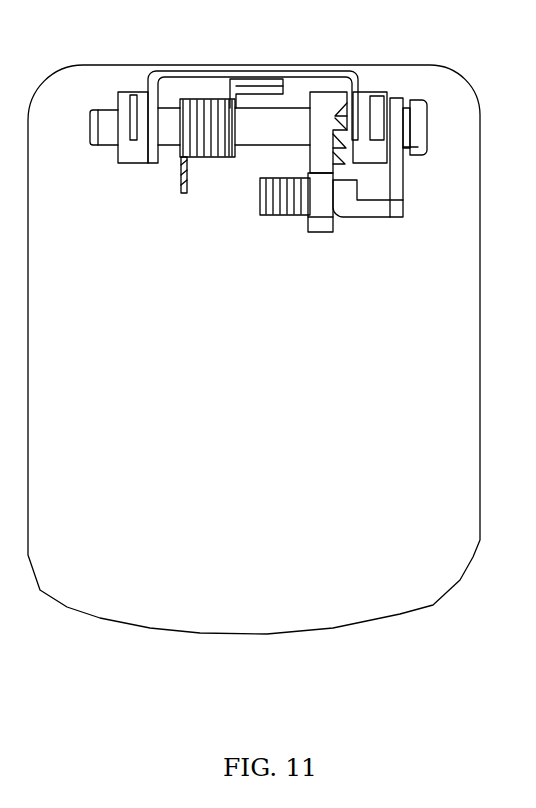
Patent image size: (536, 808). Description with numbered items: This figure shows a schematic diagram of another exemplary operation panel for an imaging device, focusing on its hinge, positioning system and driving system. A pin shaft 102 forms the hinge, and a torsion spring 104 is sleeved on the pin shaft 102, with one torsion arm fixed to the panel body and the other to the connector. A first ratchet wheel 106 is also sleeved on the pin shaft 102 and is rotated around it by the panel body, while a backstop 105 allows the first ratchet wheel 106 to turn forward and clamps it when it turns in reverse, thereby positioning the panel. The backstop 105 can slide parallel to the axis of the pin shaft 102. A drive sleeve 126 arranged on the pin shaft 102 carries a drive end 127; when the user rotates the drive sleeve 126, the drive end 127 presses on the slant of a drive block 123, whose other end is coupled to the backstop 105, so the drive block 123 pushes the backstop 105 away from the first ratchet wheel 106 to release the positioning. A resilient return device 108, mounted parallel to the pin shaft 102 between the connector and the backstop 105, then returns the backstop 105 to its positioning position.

The pin shaft 102 is at (417, 155).
The torsion spring 104 is at (203, 155).
The backstop 105 is at (317, 123).
The first ratchet wheel 106 is at (354, 138).
The resilient return device 108 is at (285, 212).
The drive block 123 is at (333, 197).
The drive sleeve 126 is at (392, 180).
The drive end 127 is at (348, 208).